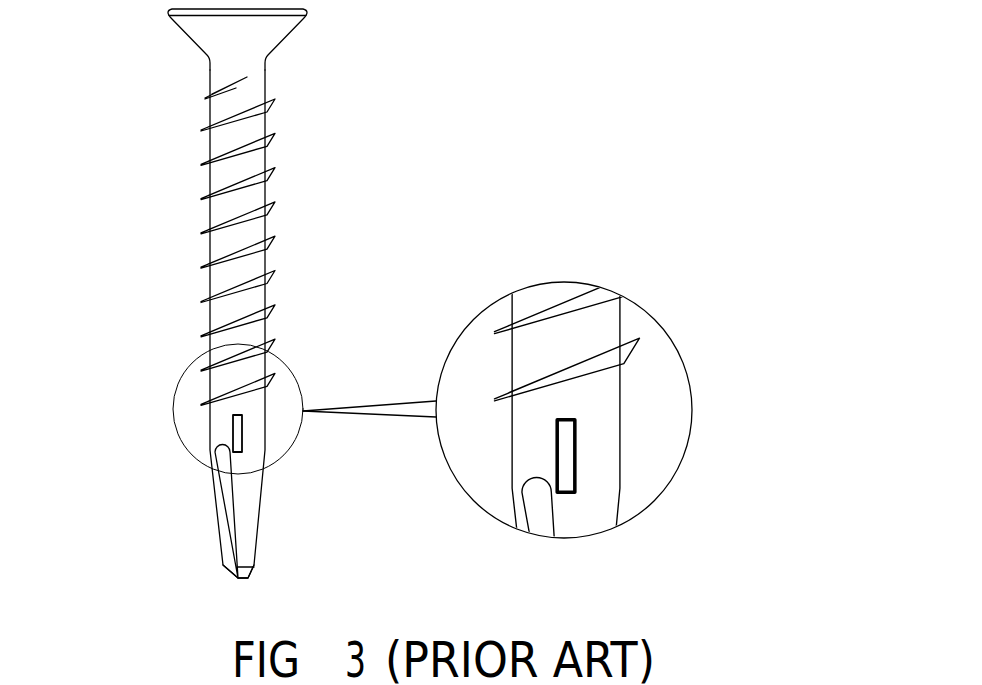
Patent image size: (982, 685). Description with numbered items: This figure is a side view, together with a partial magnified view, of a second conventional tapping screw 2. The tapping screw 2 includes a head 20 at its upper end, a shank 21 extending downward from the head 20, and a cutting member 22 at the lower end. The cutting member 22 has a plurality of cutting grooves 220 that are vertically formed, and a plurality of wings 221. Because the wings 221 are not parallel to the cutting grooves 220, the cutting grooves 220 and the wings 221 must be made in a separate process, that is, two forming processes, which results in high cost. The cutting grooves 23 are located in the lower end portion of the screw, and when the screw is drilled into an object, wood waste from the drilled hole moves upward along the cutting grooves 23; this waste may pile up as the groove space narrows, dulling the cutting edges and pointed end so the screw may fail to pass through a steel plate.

The tapping screw 2 is at (397, 347).
The head 20 is at (183, 33).
The shank 21 is at (213, 242).
The cutting member 22 is at (257, 518).
The cutting grooves 23 is at (237, 578).
The cutting grooves 220 is at (222, 510).
The wings 221 is at (235, 432).